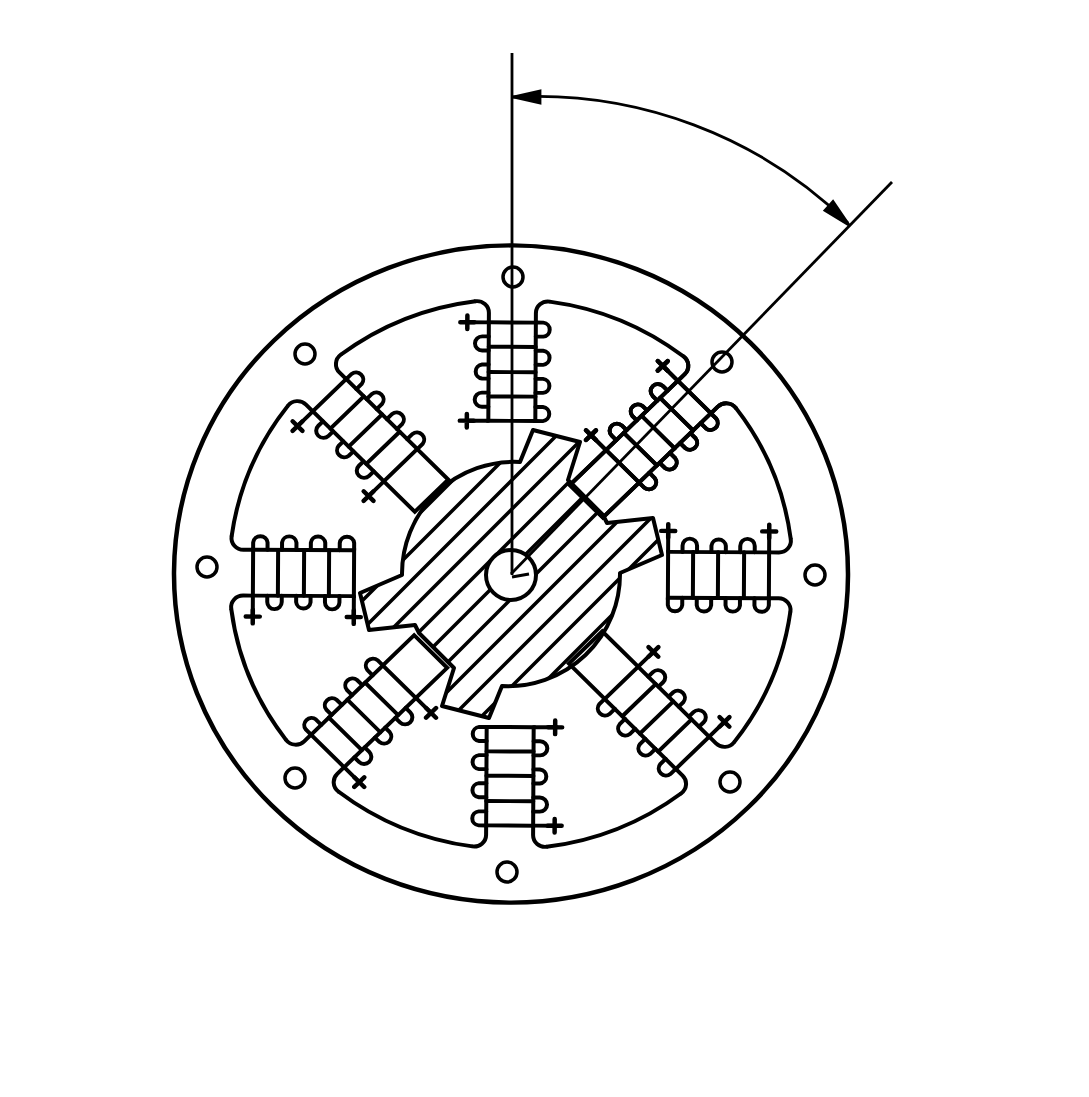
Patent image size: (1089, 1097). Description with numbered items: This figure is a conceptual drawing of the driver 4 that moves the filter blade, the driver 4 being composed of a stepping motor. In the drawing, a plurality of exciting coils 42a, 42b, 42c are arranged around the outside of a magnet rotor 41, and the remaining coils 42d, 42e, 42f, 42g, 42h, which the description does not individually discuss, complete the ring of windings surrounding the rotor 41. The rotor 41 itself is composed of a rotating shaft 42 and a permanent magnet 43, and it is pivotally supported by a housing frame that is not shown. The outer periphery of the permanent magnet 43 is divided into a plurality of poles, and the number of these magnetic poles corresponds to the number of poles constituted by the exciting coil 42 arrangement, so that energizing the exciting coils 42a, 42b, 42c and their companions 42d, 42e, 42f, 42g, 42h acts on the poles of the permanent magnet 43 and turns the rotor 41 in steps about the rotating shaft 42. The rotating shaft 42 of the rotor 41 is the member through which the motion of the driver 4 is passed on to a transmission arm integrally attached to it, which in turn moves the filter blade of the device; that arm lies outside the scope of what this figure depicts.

The driver 4 is at (222, 271).
The magnet rotor 41 is at (891, 283).
The rotating shaft 42 is at (600, 512).
The exciting coil 42a is at (498, 370).
The exciting coil 42b is at (658, 338).
The exciting coil 42c is at (724, 604).
The stator pole with coil 42d is at (636, 784).
The stator pole with coil 42e is at (476, 786).
The stator pole with coil 42f is at (312, 684).
The stator pole with coil 42g is at (298, 541).
The stator pole with coil 42h is at (345, 446).
The permanent magnet 43 is at (608, 526).